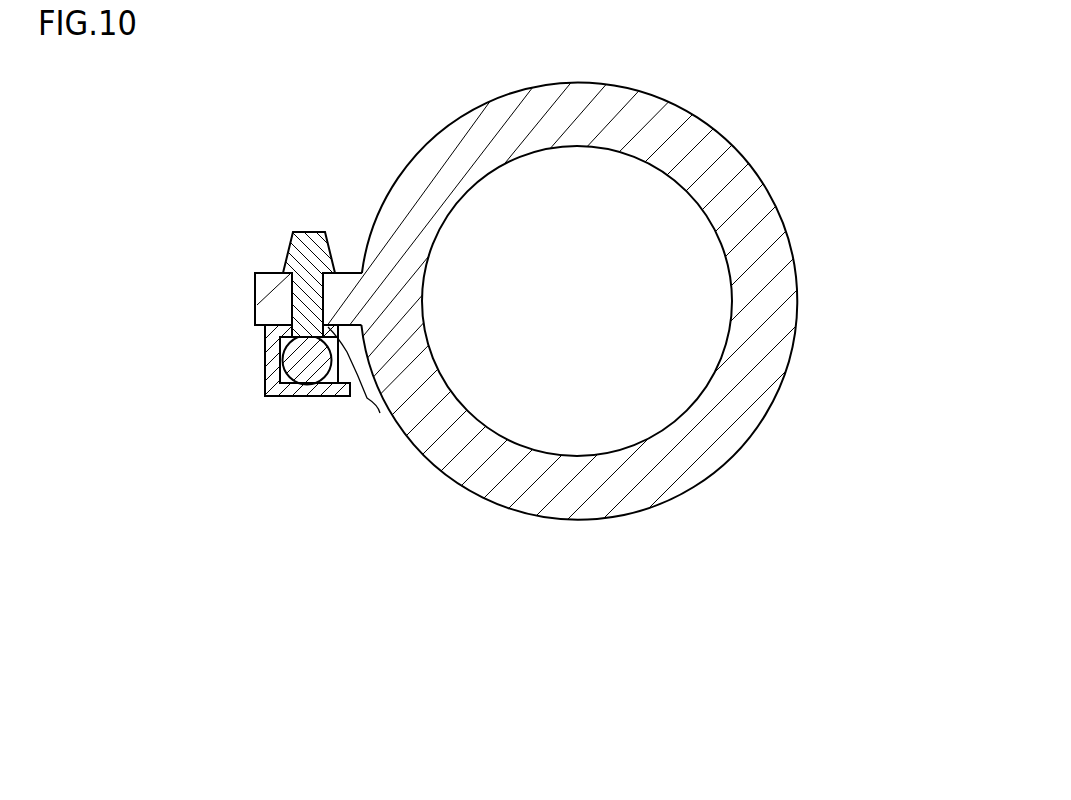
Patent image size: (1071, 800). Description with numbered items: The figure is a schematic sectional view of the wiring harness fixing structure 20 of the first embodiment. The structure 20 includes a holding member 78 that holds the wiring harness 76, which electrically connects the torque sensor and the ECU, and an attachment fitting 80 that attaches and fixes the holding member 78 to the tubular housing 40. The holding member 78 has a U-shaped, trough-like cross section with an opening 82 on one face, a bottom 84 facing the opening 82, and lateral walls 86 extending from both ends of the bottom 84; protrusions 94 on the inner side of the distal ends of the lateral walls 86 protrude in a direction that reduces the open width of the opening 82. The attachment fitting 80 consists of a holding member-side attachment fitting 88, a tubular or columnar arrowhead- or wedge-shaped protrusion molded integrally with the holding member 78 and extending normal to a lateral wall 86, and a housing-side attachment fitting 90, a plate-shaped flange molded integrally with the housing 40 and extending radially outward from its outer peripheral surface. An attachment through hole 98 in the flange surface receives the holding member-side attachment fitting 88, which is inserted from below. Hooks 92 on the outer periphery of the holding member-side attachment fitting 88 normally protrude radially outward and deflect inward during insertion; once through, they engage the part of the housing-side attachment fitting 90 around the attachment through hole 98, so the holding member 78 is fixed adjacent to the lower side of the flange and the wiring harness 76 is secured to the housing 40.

The wiring harness fixing structure 20 is at (218, 323).
The housing 40 is at (585, 495).
The wiring harness 76 is at (380, 413).
The holding member 78 is at (379, 400).
The attachment fitting 80 is at (454, 400).
The opening 82 is at (365, 400).
The bottom 84 is at (263, 345).
The lateral wall 86 is at (282, 360).
The holding member-side attachment fitting 88 is at (340, 272).
The housing-side attachment fitting 90 is at (267, 310).
The hook 92 is at (280, 270).
The protrusion 94 is at (348, 370).
The attachment through hole 98 is at (256, 275).